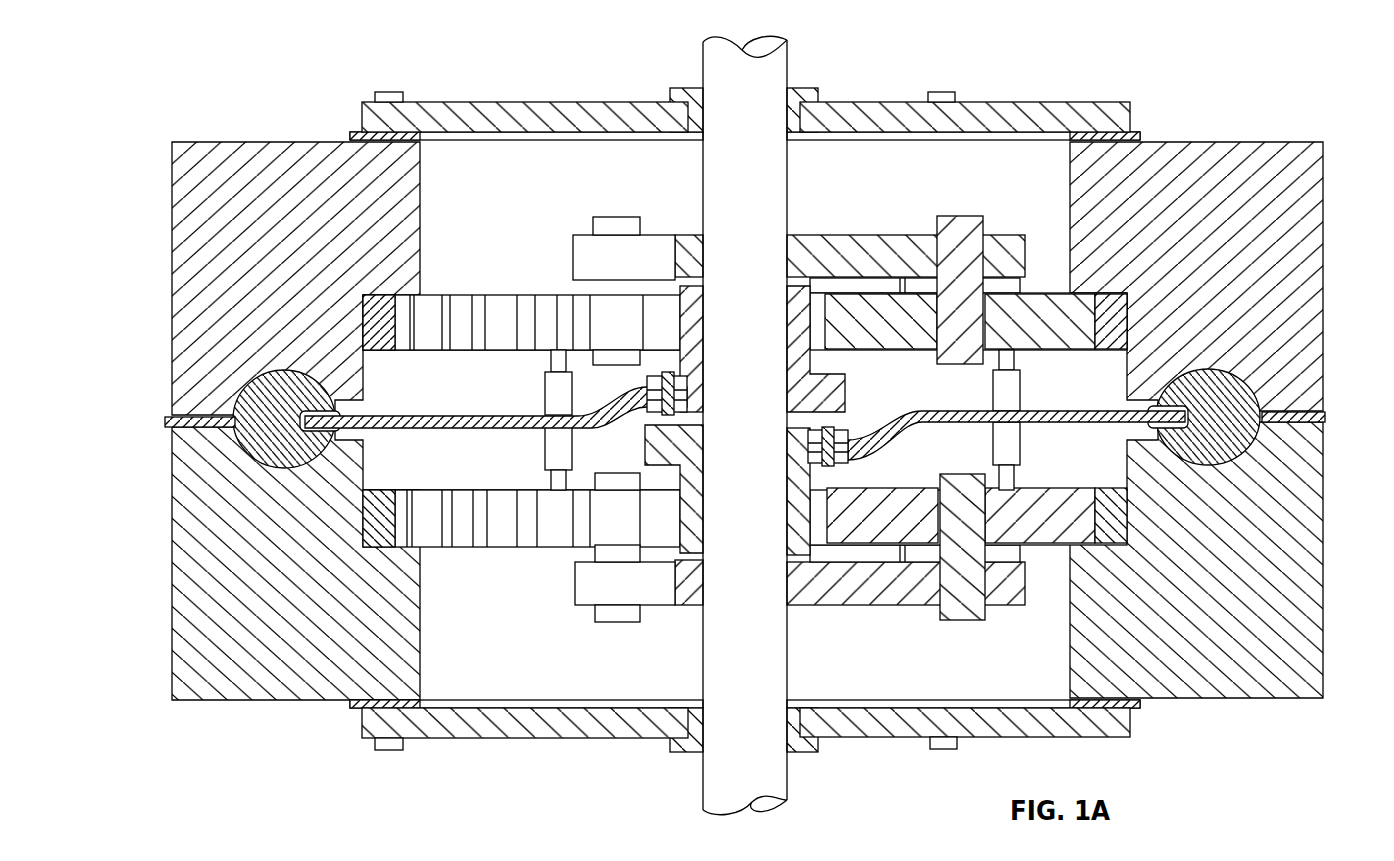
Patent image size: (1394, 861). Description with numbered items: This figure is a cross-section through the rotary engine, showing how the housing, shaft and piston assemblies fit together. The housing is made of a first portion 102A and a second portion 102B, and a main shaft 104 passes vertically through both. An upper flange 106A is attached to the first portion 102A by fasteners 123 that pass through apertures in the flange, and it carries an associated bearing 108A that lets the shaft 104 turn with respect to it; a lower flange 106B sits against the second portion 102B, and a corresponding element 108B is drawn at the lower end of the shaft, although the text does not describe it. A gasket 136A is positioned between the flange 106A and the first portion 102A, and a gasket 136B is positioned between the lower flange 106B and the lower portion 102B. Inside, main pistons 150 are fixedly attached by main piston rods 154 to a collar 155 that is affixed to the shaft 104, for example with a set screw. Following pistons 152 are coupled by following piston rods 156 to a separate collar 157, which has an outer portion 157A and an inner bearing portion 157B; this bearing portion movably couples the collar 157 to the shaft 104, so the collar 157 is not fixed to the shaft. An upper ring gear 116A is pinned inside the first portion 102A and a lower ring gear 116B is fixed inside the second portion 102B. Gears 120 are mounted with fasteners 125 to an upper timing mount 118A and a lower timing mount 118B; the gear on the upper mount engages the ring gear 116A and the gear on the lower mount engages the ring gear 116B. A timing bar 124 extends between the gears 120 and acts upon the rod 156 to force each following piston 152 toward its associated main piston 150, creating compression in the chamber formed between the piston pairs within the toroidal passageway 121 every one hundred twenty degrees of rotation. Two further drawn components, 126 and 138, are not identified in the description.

The first portion 102A is at (200, 140).
The second portion 102B is at (172, 568).
The shaft 104 is at (705, 63).
The upper flange 106A is at (575, 102).
The lower flange 106B is at (545, 742).
The bearing 108A is at (807, 85).
The lower right clamp plate 108B is at (812, 753).
The upper ring gear 116A is at (437, 293).
The lower ring gear 116B is at (435, 548).
The upper timing mount 118A is at (852, 235).
The lower timing mount 118B is at (898, 607).
The gears 120 is at (558, 293).
The toroidal passageway 121 is at (228, 447).
The fasteners 123 is at (385, 92).
The timing bar 124 is at (553, 467).
The fasteners 125 is at (607, 218).
The upper spacer 126 is at (555, 395).
The gasket 136A is at (350, 132).
The gasket 136B is at (1142, 706).
The strip end 138 is at (170, 420).
The main pistons 150 is at (247, 370).
The following pistons 152 is at (1230, 387).
The main piston rods 154 is at (533, 437).
The collar 155 is at (680, 307).
The following piston rods 156 is at (848, 443).
The collar 157 is at (677, 565).
The outer portion 157A is at (675, 538).
The inner bearing portion 157B is at (815, 547).